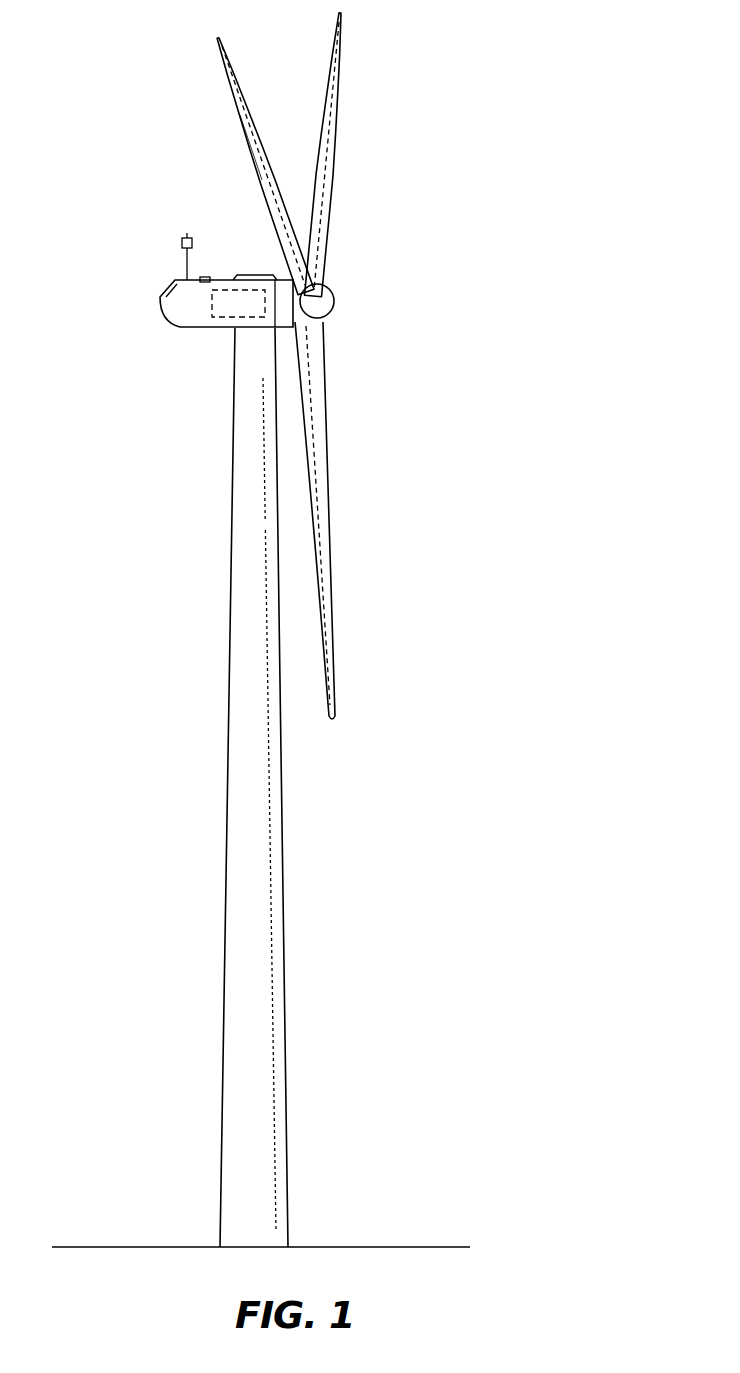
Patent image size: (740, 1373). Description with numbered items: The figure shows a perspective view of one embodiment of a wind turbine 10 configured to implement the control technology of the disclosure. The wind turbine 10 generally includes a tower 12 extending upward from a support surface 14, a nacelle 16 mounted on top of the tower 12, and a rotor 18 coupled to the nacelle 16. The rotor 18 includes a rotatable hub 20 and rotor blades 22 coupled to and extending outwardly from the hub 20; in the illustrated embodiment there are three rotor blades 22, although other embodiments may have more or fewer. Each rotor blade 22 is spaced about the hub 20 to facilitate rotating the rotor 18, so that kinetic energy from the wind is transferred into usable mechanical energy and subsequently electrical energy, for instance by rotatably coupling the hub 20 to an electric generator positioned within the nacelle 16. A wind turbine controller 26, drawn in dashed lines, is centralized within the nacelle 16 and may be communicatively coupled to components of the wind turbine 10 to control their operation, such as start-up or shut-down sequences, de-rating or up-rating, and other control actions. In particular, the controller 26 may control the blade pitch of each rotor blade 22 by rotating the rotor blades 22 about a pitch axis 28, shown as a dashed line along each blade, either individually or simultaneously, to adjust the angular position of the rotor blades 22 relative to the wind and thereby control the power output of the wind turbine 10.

The wind turbine 10 is at (472, 135).
The tower 12 is at (278, 920).
The support surface 14 is at (137, 1245).
The nacelle 16 is at (193, 313).
The rotor 18 is at (309, 366).
The rotatable hub 20 is at (335, 305).
The rotor blade 22 is at (323, 128).
The wind turbine controller 26 is at (232, 288).
The pitch axis 28 is at (260, 180).